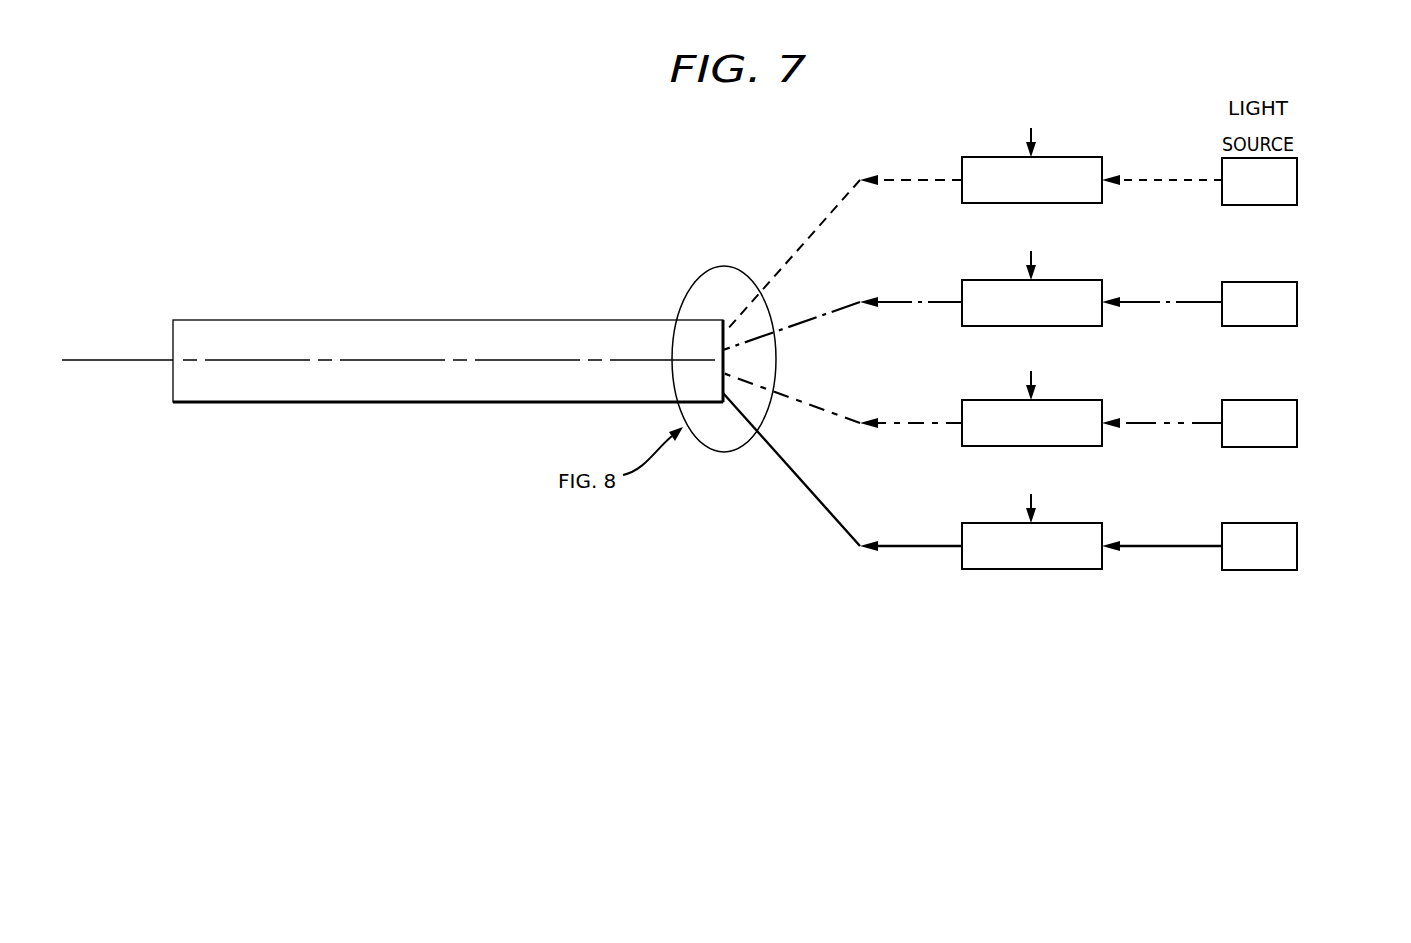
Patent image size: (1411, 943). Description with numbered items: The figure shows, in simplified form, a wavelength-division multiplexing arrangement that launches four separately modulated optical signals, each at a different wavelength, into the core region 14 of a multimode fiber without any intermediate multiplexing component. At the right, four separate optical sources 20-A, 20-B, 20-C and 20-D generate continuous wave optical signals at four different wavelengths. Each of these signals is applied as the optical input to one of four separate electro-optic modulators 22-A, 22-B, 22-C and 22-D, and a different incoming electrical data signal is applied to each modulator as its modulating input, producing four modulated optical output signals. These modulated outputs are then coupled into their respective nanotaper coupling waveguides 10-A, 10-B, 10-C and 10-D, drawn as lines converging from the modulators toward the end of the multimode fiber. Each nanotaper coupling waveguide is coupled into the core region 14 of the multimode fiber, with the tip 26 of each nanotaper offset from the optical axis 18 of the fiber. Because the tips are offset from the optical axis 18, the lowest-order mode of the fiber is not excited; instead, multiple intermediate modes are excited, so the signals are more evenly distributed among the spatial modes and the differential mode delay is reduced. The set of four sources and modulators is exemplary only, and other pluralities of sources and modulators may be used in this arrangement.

The optical axis 18 is at (120, 360).
The core region 14 is at (383, 335).
The tip 26 is at (722, 355).
The nanotaper coupling waveguide 10-A is at (733, 332).
The nanotaper coupling waveguide 10-B is at (735, 344).
The nanotaper coupling waveguide 10-C is at (735, 375).
The nanotaper coupling waveguide 10-D is at (738, 395).
The electro-optic modulator 22-A is at (1070, 157).
The electro-optic modulator 22-B is at (1070, 280).
The electro-optic modulator 22-C is at (1070, 400).
The electro-optic modulator 22-D is at (1070, 523).
The optical source 20-A is at (1297, 181).
The optical source 20-B is at (1297, 303).
The optical source 20-C is at (1297, 424).
The optical source 20-D is at (1297, 547).